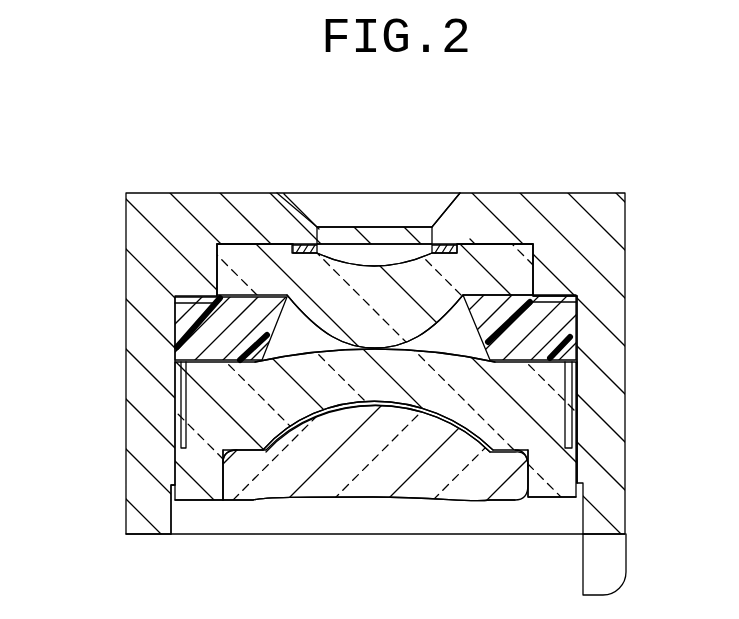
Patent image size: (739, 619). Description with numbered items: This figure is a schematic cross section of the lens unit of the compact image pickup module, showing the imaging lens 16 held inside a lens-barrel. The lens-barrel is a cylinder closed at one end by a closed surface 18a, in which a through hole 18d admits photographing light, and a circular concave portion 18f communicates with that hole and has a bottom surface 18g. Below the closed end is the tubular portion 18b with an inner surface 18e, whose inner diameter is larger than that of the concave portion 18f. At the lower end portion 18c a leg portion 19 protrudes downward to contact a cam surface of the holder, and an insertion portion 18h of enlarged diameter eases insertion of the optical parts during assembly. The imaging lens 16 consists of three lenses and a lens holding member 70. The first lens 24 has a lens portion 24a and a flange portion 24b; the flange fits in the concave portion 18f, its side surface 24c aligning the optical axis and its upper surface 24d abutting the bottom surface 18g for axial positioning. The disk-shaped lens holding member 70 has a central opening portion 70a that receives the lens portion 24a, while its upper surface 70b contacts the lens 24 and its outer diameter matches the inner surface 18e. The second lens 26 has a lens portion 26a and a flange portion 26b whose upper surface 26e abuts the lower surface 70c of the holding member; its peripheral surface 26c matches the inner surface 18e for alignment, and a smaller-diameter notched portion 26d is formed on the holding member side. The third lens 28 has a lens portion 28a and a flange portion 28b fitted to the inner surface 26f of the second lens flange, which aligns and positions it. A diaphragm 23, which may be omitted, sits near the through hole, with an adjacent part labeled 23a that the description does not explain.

The imaging lens 16 is at (551, 295).
The closed surface 18a is at (573, 205).
The tubular portion 18b is at (617, 460).
The end portion 18c is at (615, 542).
The through hole 18d is at (446, 205).
The inner surface 18e is at (580, 383).
The concave portion 18f is at (540, 252).
The bottom surface 18g is at (520, 250).
The insertion portion 18h is at (174, 520).
The leg portion 19 is at (618, 576).
The diaphragm 23 is at (305, 243).
The adhesive layer 23a is at (313, 252).
The lens 24 is at (243, 290).
The lens portion 24a is at (368, 280).
The flange portion 24b is at (258, 260).
The side surface 24c is at (217, 268).
The upper surface 24d is at (230, 247).
The lens 26 is at (240, 433).
The lens portion 26a is at (370, 402).
The flange portion 26b is at (196, 500).
The peripheral surface 26c is at (224, 476).
The notched portion 26d is at (185, 422).
The upper surface 26e is at (265, 364).
The inner surface 26f is at (523, 483).
The lens 28 is at (262, 484).
The lens portion 28a is at (405, 490).
The flange portion 28b is at (253, 502).
The lens holding member 70 is at (560, 327).
The opening portion 70a is at (272, 330).
The upper surface 70b is at (175, 303).
The lower surface 70c is at (242, 358).